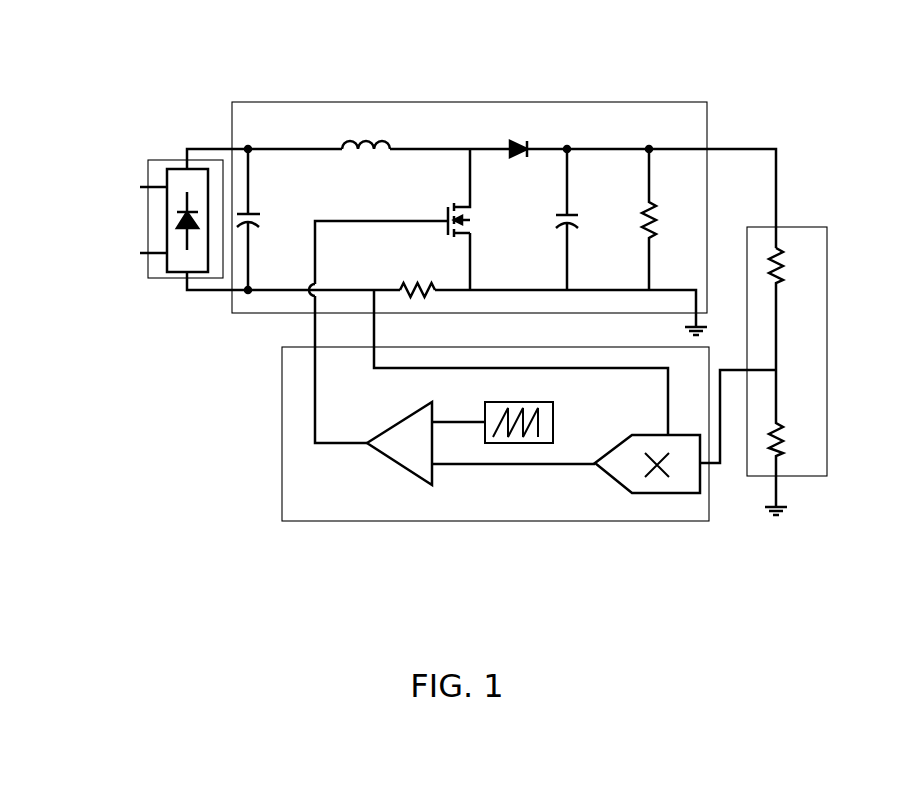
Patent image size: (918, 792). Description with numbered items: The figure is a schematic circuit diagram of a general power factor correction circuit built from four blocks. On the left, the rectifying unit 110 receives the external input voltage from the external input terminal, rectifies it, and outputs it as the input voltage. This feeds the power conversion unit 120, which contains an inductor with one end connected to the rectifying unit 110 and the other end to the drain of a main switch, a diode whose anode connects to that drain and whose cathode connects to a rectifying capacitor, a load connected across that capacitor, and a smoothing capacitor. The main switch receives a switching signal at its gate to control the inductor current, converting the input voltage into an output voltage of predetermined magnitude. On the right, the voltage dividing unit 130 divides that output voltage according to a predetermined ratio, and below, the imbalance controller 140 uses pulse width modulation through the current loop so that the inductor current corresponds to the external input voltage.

The rectifying unit 110 is at (157, 159).
The power conversion unit 120 is at (540, 101).
The voltage dividing unit 130 is at (797, 227).
The imbalance controller 140 is at (470, 522).